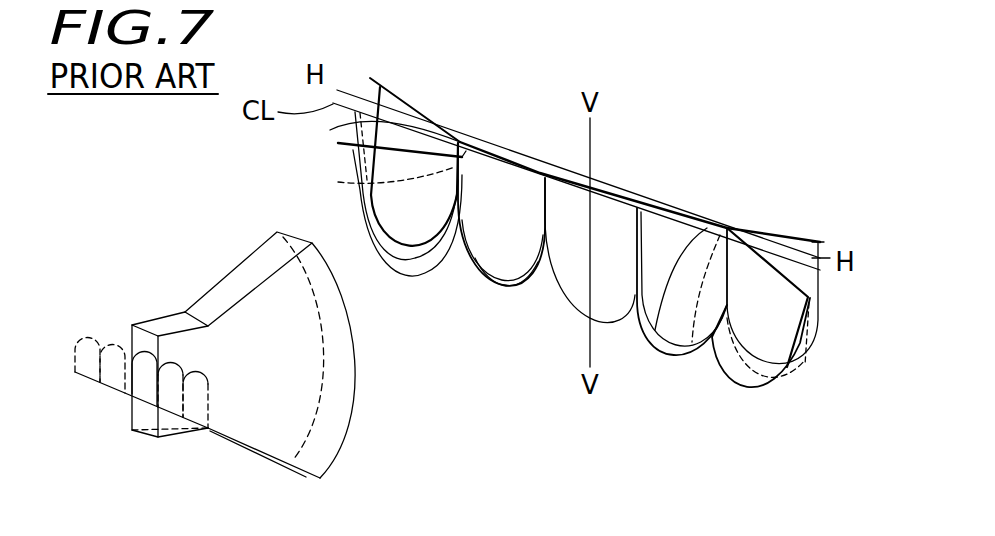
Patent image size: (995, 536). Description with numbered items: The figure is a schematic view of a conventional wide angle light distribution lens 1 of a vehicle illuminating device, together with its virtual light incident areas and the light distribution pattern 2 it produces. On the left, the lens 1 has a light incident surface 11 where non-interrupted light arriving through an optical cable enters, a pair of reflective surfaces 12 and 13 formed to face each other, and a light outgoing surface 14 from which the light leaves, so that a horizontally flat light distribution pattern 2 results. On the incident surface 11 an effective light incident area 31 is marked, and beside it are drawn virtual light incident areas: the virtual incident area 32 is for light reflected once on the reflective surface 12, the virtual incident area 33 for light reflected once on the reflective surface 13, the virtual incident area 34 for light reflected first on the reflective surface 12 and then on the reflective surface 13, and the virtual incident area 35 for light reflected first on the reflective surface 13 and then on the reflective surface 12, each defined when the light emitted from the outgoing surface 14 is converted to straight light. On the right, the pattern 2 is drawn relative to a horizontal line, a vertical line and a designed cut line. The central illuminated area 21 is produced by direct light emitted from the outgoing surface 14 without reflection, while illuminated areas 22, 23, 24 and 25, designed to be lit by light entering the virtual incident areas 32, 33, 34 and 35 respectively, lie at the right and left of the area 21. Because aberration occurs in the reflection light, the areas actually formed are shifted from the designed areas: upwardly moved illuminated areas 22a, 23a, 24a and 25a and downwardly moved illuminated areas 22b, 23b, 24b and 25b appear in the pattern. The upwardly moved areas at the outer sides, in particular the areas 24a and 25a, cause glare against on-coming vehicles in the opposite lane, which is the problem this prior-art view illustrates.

The wide angle light distribution lens 1 is at (218, 256).
The light incident surface 11 is at (140, 410).
The reflective surface 12 is at (282, 407).
The reflective surface 13 is at (240, 303).
The light outgoing surface 14 is at (338, 352).
The effective light incident area 31 is at (137, 375).
The virtual light incident area 32 is at (170, 393).
The virtual light incident area 33 is at (112, 352).
The virtual light incident area 34 is at (198, 420).
The virtual light incident area 35 is at (77, 347).
The light distribution pattern 2 is at (627, 167).
The illuminated area 21 is at (570, 280).
The illuminated area 22 is at (348, 178).
The upwardly moved illuminated area 22a is at (337, 143).
The downwardly moved illuminated area 22b is at (527, 285).
The illuminated area 23 is at (670, 352).
The upwardly moved illuminated area 23a is at (655, 325).
The downwardly moved illuminated area 23b is at (705, 368).
The illuminated area 24 is at (396, 175).
The upwardly moved illuminated area 24a is at (399, 100).
The downwardly moved illuminated area 24b is at (423, 262).
The illuminated area 25 is at (800, 377).
The upwardly moved illuminated area 25a is at (804, 240).
The downwardly moved illuminated area 25b is at (753, 383).